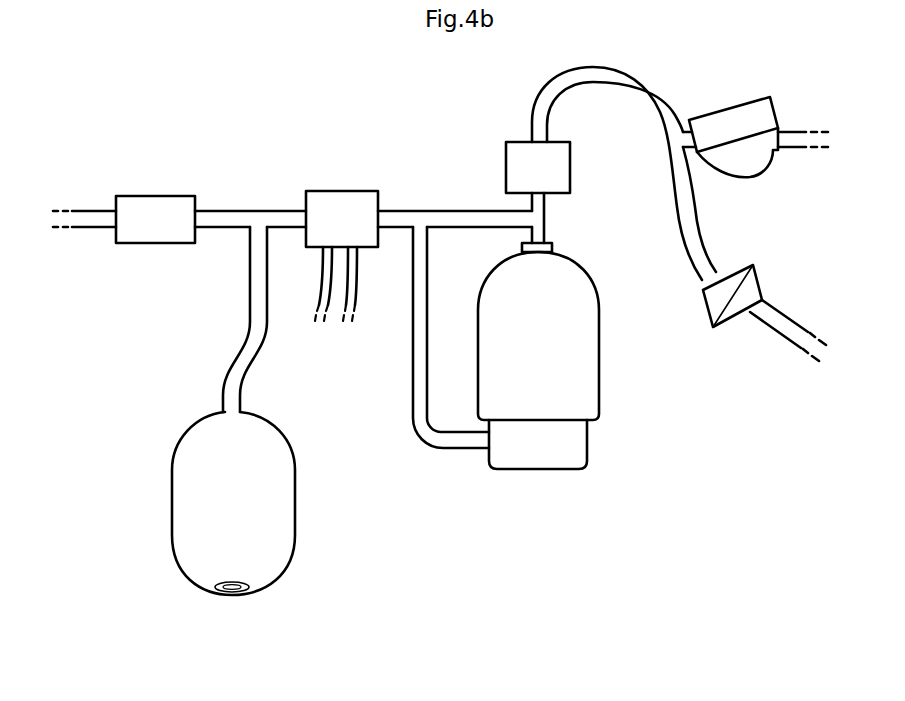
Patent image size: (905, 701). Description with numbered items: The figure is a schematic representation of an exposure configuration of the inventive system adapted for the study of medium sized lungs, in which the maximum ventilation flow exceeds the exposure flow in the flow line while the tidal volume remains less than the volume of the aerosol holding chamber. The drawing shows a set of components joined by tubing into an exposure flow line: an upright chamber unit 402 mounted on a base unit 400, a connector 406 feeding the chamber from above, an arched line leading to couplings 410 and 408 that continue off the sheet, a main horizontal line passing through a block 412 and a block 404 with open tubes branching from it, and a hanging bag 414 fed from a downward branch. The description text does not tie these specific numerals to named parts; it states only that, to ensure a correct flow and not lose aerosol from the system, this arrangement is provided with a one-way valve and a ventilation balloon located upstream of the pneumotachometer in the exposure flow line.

The pump unit 400 is at (575, 443).
The reservoir 402 is at (583, 363).
The connector block 404 is at (348, 200).
The connector 406 is at (513, 162).
The connector coupling 408 is at (750, 288).
The connector 410 is at (760, 163).
The connector 412 is at (148, 200).
The collection bag 414 is at (267, 485).